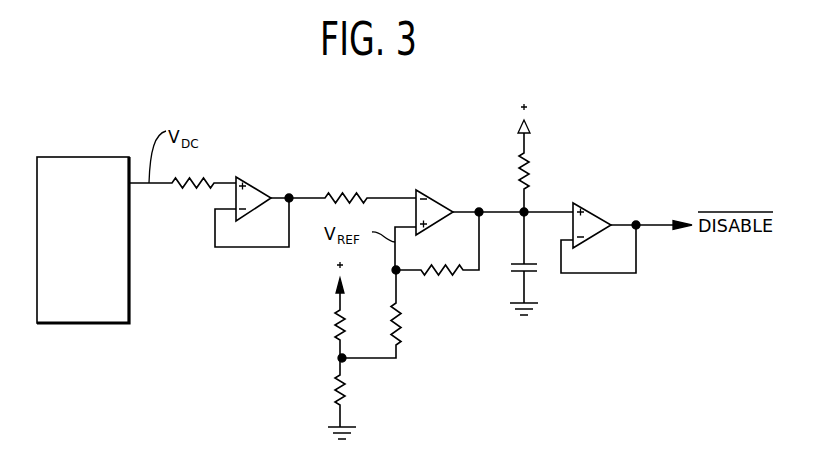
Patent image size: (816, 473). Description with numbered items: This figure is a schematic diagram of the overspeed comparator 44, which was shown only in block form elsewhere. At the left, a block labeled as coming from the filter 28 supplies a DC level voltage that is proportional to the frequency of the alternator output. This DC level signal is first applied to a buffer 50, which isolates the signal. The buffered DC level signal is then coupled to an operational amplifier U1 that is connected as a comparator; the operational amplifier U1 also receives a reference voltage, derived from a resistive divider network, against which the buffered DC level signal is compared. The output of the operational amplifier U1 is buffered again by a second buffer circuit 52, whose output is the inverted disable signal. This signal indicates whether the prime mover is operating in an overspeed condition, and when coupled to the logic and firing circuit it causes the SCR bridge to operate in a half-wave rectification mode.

The filter 28 is at (83, 240).
The buffer 50 is at (257, 193).
The operational amplifier U1 is at (433, 205).
The overspeed comparator 44 is at (433, 317).
The second buffer circuit 52 is at (593, 218).